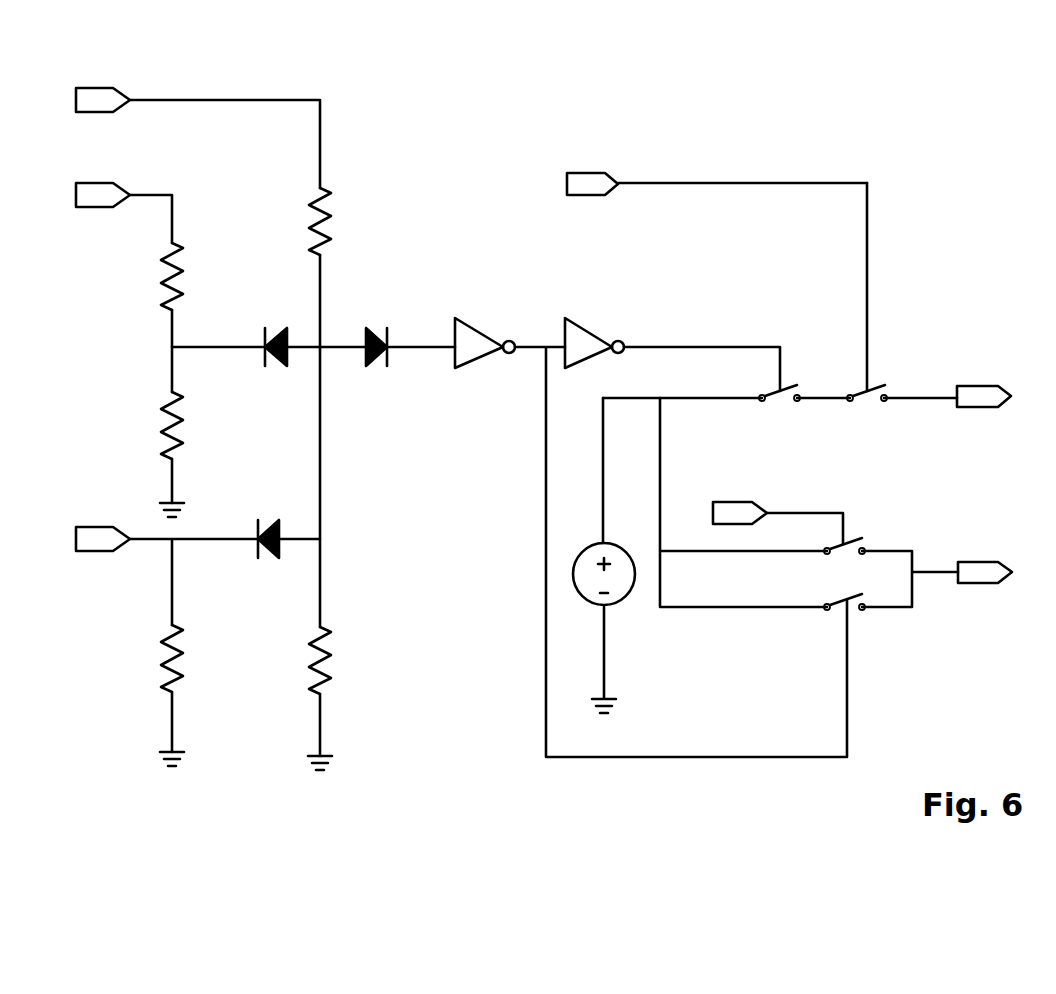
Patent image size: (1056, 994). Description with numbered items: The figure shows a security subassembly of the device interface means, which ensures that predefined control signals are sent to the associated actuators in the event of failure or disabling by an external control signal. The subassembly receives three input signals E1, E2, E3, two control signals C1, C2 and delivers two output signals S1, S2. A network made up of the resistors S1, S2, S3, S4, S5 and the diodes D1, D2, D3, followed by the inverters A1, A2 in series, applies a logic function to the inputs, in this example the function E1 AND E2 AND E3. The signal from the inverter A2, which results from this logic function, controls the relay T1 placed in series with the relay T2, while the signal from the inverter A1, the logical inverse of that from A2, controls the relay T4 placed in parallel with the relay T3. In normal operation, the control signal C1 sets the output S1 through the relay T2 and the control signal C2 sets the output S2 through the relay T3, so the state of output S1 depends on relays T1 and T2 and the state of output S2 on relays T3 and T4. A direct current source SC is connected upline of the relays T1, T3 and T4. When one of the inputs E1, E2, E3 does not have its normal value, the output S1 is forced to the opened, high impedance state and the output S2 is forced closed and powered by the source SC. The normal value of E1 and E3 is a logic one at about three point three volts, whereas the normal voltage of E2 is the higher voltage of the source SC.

The input signal E1 is at (93, 88).
The input signal E2 is at (93, 183).
The input signal E3 is at (75, 527).
The output signal S1 is at (183, 288).
The output signal S2 is at (183, 442).
The resistor S3 is at (323, 232).
The resistor S4 is at (182, 668).
The resistor S5 is at (328, 684).
The diode D1 is at (268, 328).
The diode D2 is at (375, 327).
The diode D3 is at (263, 522).
The inverter A1 is at (473, 328).
The inverter A2 is at (583, 328).
The control signal C1 is at (588, 173).
The control signal C2 is at (720, 502).
The relay T1 is at (798, 397).
The relay T2 is at (885, 397).
The relay T3 is at (872, 550).
The relay T4 is at (865, 610).
The direct current source SC is at (574, 568).